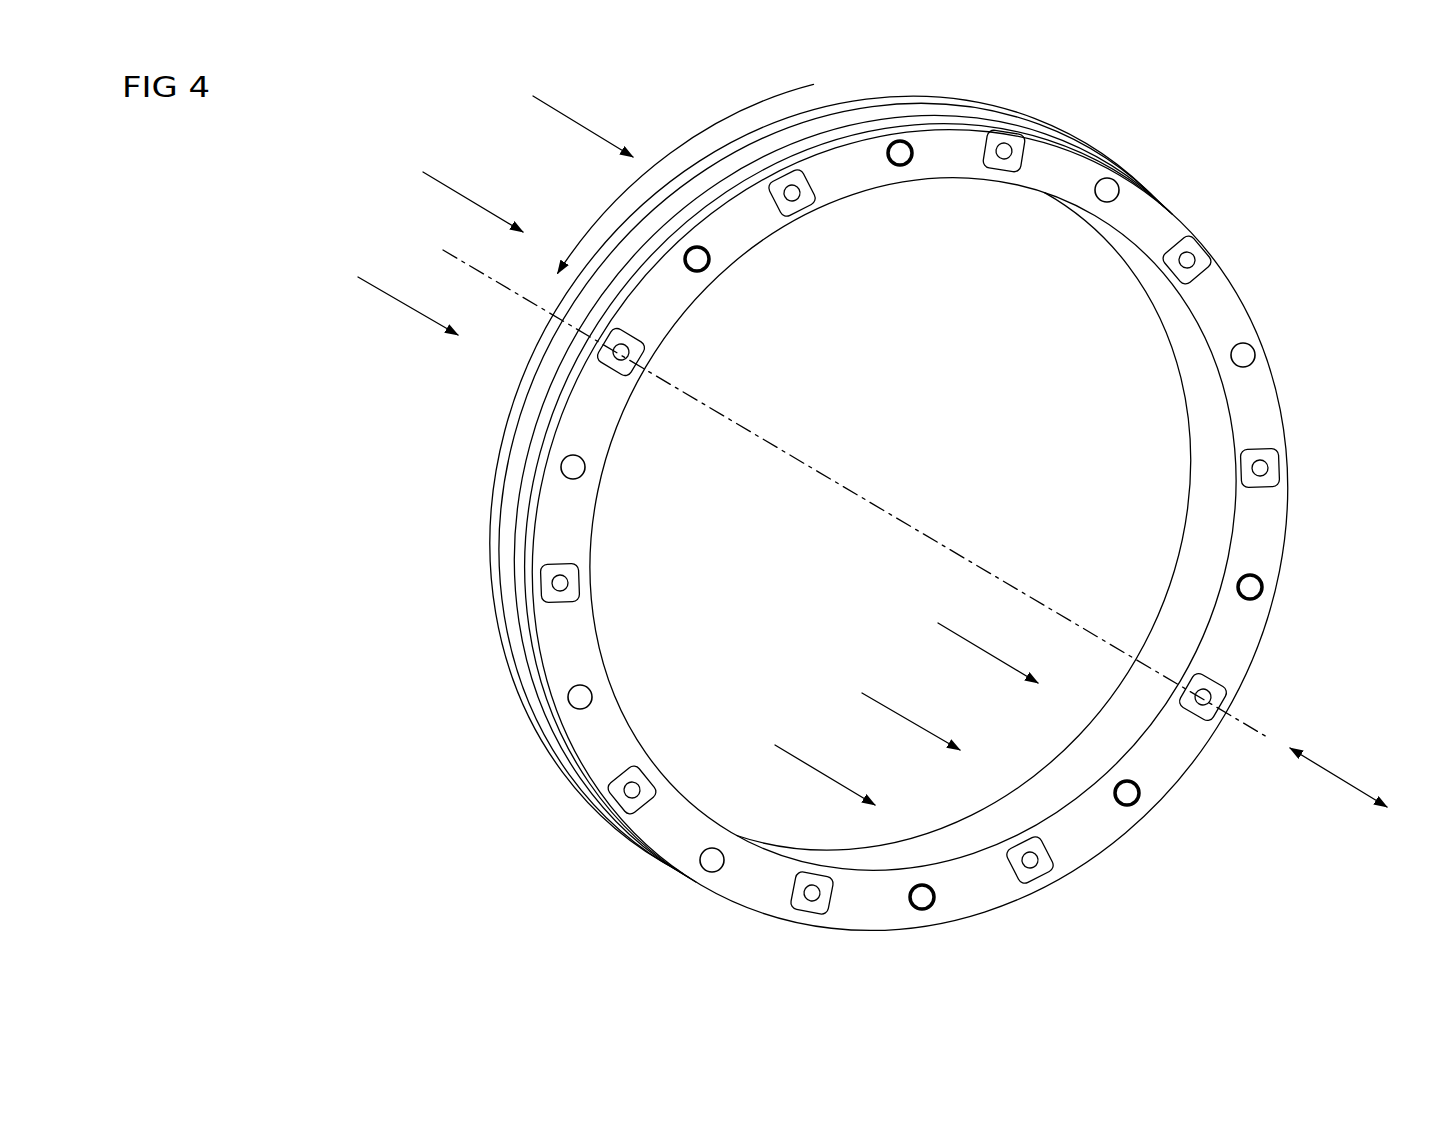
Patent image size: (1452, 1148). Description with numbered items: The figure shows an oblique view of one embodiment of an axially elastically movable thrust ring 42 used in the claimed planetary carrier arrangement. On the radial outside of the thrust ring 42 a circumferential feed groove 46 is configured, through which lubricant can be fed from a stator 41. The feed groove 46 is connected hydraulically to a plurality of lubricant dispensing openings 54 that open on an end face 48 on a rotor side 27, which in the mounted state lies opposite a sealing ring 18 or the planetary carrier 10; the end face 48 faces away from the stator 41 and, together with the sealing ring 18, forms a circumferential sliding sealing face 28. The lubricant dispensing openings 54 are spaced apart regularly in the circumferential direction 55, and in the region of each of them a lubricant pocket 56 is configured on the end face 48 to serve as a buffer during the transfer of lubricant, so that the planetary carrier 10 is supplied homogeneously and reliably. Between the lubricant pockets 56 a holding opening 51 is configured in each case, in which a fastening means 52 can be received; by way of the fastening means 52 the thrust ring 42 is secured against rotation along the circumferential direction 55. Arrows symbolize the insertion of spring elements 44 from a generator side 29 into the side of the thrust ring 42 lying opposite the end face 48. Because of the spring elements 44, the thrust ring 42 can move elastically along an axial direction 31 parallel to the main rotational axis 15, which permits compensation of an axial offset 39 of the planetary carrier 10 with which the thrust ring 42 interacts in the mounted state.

The planetary carrier 10 is at (909, 535).
The main rotational axis 15 is at (1250, 727).
The sealing ring 18 is at (909, 535).
The rotor side 27 is at (1415, 674).
The sliding sealing face 28 is at (909, 535).
The generator side 29 is at (325, 359).
The axial direction 31 is at (1338, 755).
The axial offset 39 is at (1338, 773).
The stator 41 is at (325, 426).
The axially elastically movable thrust ring 42 is at (1272, 535).
The spring elements 44 is at (606, 140).
The feed groove 46 is at (535, 411).
The end face 48 is at (1228, 302).
The holding opening 51 is at (883, 525).
The fastening means 52 is at (1110, 190).
The lubricant dispensing openings 54 is at (1188, 262).
The circumferential direction 55 is at (612, 205).
The lubricant pocket 56 is at (800, 218).